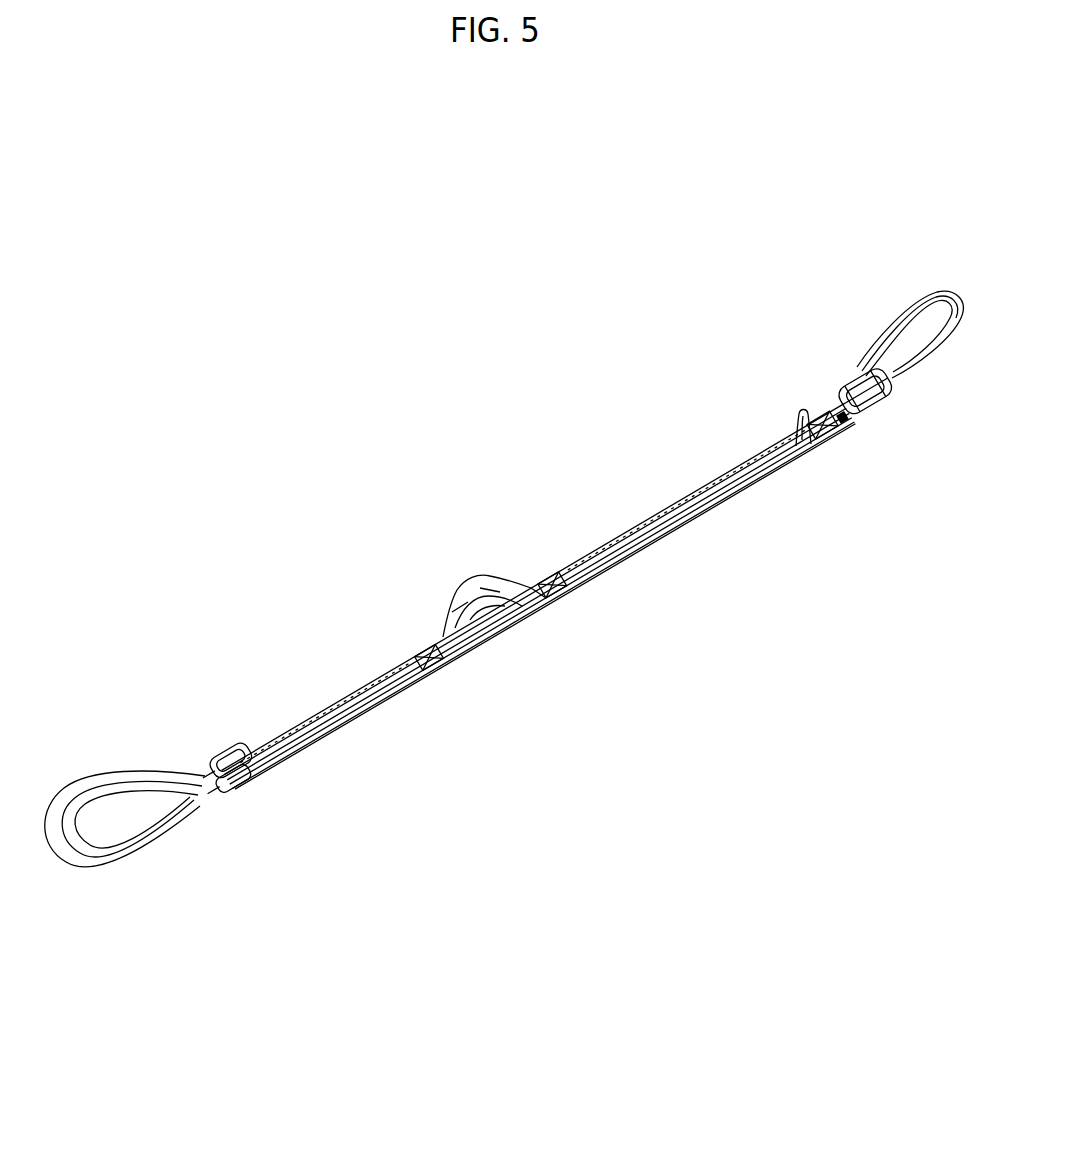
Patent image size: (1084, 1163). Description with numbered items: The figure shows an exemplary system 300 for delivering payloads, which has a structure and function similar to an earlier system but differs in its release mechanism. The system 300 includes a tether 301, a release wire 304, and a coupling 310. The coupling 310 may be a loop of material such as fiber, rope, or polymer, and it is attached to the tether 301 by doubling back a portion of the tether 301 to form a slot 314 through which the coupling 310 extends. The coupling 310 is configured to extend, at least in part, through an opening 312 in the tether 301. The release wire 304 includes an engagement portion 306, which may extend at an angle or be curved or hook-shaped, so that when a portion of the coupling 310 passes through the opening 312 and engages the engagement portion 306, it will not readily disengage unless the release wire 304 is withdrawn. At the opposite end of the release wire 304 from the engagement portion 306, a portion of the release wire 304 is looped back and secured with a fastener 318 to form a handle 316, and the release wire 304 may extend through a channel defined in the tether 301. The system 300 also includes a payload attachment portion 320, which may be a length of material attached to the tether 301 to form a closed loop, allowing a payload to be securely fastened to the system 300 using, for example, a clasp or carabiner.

The system 300 is at (434, 458).
The tether 301 is at (302, 752).
The release wire 304 is at (700, 498).
The engagement portion 306 is at (788, 432).
The coupling 310 is at (893, 318).
The opening 312 is at (797, 470).
The slot 314 is at (865, 420).
The handle 316 is at (118, 865).
The fastener 318 is at (227, 745).
The payload attachment portion 320 is at (458, 588).